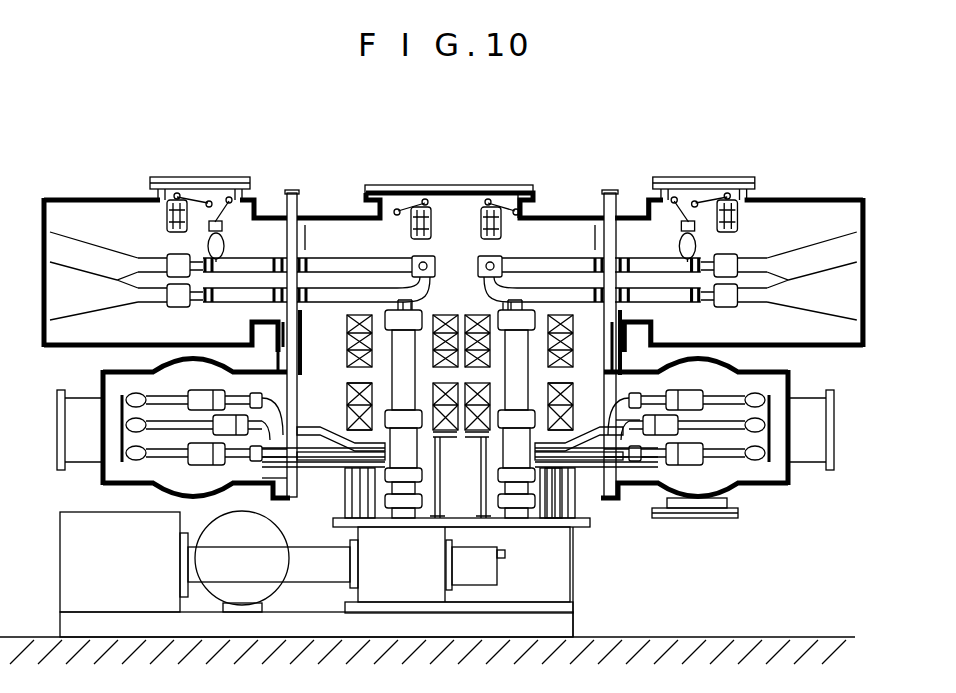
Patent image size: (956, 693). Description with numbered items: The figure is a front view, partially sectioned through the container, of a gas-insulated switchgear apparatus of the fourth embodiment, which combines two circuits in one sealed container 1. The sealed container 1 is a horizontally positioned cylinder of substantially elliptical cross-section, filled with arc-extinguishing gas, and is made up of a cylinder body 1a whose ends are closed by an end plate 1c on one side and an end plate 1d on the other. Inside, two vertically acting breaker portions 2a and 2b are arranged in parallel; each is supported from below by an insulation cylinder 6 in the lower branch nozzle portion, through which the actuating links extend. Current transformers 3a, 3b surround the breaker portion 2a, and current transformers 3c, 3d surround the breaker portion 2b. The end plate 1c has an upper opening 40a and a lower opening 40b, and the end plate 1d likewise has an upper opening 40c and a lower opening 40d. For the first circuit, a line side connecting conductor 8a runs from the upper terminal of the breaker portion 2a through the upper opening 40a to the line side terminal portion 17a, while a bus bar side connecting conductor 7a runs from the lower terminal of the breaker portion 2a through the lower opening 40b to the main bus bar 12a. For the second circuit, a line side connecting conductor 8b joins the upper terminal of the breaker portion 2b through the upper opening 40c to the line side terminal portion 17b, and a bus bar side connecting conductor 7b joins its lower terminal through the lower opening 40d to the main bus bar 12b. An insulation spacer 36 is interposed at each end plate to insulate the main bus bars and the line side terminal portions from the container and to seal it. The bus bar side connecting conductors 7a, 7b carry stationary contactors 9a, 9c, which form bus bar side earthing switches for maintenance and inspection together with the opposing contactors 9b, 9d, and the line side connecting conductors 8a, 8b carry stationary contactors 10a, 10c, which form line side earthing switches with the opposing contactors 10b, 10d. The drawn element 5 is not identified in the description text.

The sealed container 1 is at (348, 216).
The cylinder body 1a is at (540, 210).
The end plate 1c is at (288, 195).
The end plate 1d is at (608, 195).
The breaker portion 2a is at (400, 347).
The breaker portion 2b is at (517, 353).
The current transformer 3a is at (348, 395).
The current transformer 3b is at (348, 360).
The current transformer 3c is at (560, 396).
The current transformer 3d is at (545, 350).
The drive rod 5 is at (475, 472).
The insulation cylinder 6 is at (512, 502).
The bus bar side connecting conductor 7a is at (335, 422).
The bus bar side connecting conductor 7b is at (583, 447).
The line side connecting conductor 8a is at (360, 258).
The line side connecting conductor 8b is at (570, 258).
The stationary contactor 9a is at (345, 482).
The moving contactor 9b is at (345, 505).
The stationary contactor 9c is at (580, 487).
The opposing contactor 9d is at (565, 500).
The stationary contactor 10a is at (405, 255).
The moving contactor 10b is at (427, 205).
The stationary contactor 10c is at (478, 262).
The opposing contactor 10d is at (492, 205).
The main bus bar 12a is at (80, 400).
The main bus bar 12b is at (813, 400).
The line side terminal portion 17a is at (103, 198).
The line side terminal portion 17b is at (802, 200).
The insulation spacer 36 is at (287, 196).
The upper opening 40a is at (305, 240).
The lower opening 40b is at (287, 482).
The upper opening 40c is at (592, 233).
The lower opening 40d is at (640, 425).